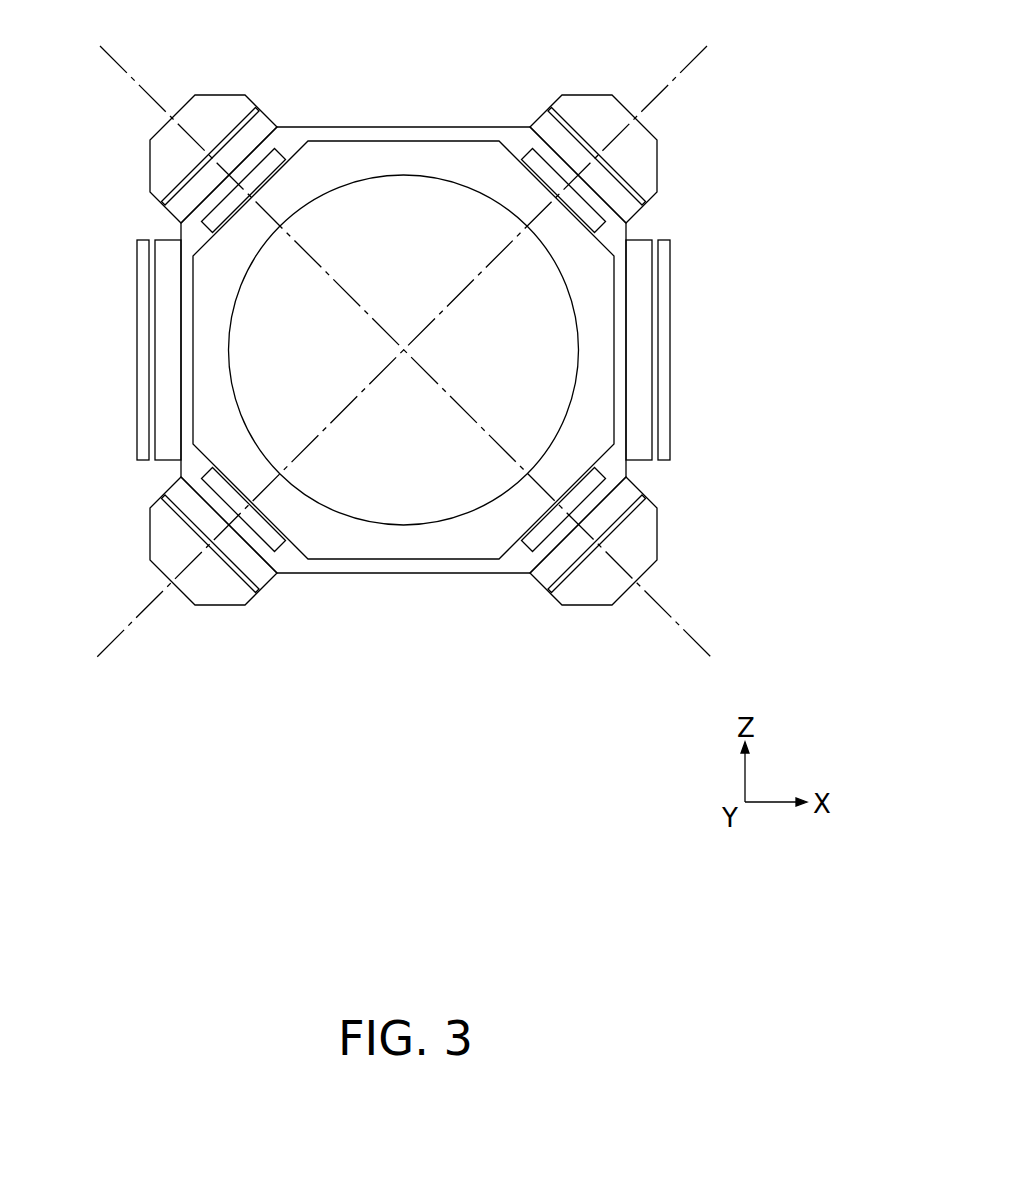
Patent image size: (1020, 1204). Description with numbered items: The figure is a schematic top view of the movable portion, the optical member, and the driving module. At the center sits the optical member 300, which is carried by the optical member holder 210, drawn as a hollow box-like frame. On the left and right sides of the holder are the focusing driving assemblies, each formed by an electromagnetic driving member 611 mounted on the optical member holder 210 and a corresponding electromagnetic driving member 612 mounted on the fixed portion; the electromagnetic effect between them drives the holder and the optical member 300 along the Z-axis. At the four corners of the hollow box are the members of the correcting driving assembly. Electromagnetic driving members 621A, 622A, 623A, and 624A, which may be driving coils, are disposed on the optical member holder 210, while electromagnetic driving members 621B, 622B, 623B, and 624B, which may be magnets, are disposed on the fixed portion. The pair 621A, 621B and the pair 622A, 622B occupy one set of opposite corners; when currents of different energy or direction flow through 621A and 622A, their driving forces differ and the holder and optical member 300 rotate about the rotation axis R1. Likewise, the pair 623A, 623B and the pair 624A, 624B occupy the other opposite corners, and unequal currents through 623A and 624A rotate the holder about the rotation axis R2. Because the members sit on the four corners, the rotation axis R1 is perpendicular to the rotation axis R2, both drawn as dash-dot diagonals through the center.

The optical member holder 210 is at (460, 157).
The optical member 300 is at (402, 200).
The electromagnetic driving member 611 is at (167, 288).
The electromagnetic driving member 612 is at (142, 334).
The electromagnetic driving member 621A is at (180, 219).
The electromagnetic driving member 621B is at (155, 165).
The electromagnetic driving member 622A is at (625, 490).
The electromagnetic driving member 622B is at (653, 535).
The electromagnetic driving member 623A is at (628, 217).
The electromagnetic driving member 623B is at (655, 165).
The electromagnetic driving member 624A is at (180, 488).
The electromagnetic driving member 624B is at (153, 536).
The rotation axis R1 is at (423, 337).
The rotation axis R2 is at (384, 337).